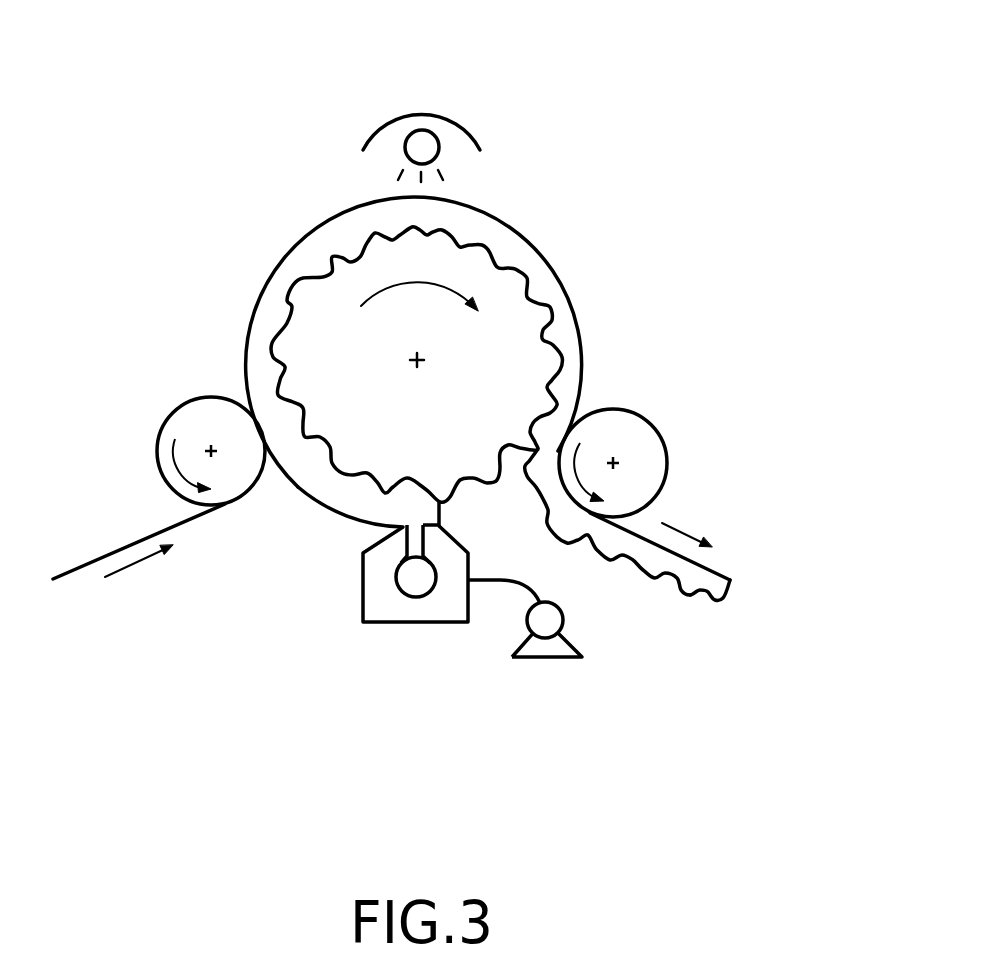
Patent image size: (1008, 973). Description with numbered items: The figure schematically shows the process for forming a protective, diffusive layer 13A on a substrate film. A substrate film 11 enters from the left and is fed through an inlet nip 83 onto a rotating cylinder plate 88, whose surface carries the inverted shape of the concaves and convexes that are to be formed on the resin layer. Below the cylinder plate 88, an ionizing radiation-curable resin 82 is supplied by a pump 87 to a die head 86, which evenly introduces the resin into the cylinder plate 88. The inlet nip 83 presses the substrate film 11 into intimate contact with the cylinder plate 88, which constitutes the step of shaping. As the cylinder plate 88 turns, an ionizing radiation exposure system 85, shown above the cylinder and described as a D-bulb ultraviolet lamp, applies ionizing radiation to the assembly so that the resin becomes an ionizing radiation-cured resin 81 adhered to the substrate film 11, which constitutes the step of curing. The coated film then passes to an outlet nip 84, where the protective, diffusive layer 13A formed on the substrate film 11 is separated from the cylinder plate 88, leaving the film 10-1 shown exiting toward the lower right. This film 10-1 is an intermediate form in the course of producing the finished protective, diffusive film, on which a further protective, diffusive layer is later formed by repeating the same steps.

The ionizing radiation-cured resin 81 is at (531, 259).
The ionizing radiation-curable resin 82 is at (318, 498).
The cylinder plate 88 is at (518, 330).
The protective, diffusive layer 13A is at (695, 596).
The film 10-1 is at (742, 550).
The inlet nip 83 is at (172, 410).
The outlet nip 84 is at (657, 423).
The substrate film 11 is at (94, 558).
The die head 86 is at (410, 623).
The pump 87 is at (553, 657).
The ionizing radiation exposure system 85 is at (465, 130).